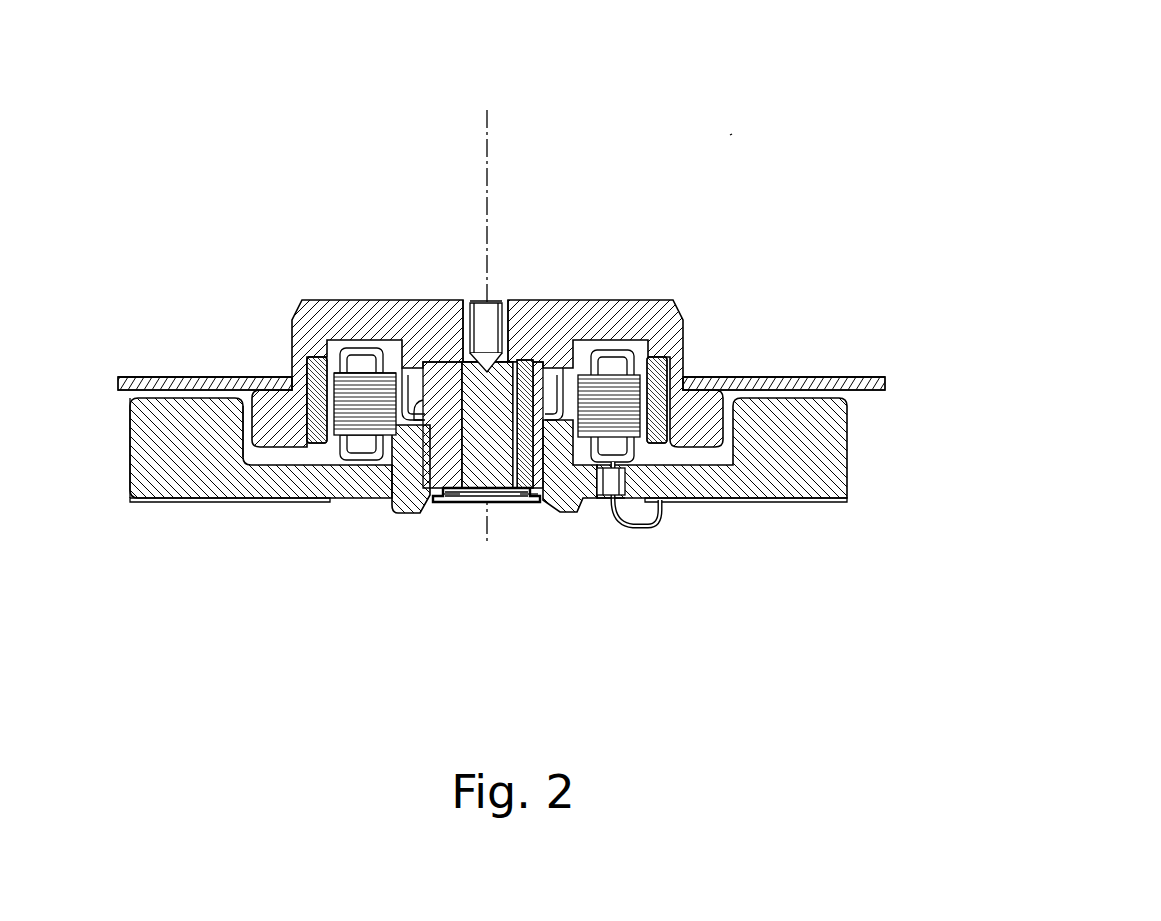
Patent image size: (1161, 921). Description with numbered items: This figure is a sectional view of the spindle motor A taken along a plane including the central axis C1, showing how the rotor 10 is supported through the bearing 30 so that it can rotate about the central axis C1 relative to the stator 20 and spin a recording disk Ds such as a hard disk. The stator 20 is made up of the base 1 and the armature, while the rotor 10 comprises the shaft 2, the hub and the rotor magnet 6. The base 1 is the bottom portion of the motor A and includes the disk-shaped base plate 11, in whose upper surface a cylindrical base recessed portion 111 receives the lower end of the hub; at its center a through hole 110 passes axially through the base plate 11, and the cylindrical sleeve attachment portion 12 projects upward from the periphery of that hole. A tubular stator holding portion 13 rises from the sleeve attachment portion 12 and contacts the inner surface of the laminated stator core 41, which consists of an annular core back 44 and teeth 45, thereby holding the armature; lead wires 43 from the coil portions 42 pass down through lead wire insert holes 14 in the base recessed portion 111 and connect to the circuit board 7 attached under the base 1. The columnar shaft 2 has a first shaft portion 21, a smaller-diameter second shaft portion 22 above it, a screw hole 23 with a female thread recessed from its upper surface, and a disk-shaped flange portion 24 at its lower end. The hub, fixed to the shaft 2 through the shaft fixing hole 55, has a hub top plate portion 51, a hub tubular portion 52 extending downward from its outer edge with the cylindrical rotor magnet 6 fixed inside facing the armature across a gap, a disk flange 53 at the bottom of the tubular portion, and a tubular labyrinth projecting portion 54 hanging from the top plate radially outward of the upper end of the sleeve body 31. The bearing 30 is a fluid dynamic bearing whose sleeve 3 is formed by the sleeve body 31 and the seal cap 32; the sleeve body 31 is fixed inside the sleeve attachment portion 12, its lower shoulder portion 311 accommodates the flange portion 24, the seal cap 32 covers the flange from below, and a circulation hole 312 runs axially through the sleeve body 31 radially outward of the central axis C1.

The motor A is at (730, 135).
The central axis C1 is at (490, 124).
The recording disk Ds is at (820, 385).
The base 1 is at (828, 460).
The shaft 2 is at (477, 501).
The sleeve 3 is at (526, 362).
The rotor magnet 6 is at (315, 372).
The circuit board 7 is at (755, 501).
The rotor 10 is at (668, 293).
The base plate 11 is at (147, 478).
The sleeve attachment portion 12 is at (565, 480).
The stator holding portion 13 is at (575, 325).
The lead wire insert hole 14 is at (603, 492).
The stator 20 is at (858, 424).
The first shaft portion 21 is at (500, 495).
The second shaft portion 22 is at (465, 300).
The screw hole 23 is at (478, 300).
The flange portion 24 is at (517, 501).
The bearing 30 is at (455, 503).
The sleeve body 31 is at (461, 501).
The seal cap 32 is at (523, 501).
The stator core 41 is at (270, 552).
The coil portion 42 is at (352, 362).
The lead wire 43 is at (657, 530).
The annular core back 44 is at (380, 462).
The teeth 45 is at (358, 420).
The hub top plate portion 51 is at (603, 348).
The hub tubular portion 52 is at (683, 368).
The disk flange 53 is at (708, 386).
The labyrinth projecting portion 54 is at (390, 345).
The shaft fixing hole 55 is at (515, 362).
The through hole 110 is at (395, 512).
The base recessed portion 111 is at (245, 420).
The shoulder portion 311 is at (452, 505).
The circulation hole 312 is at (547, 501).